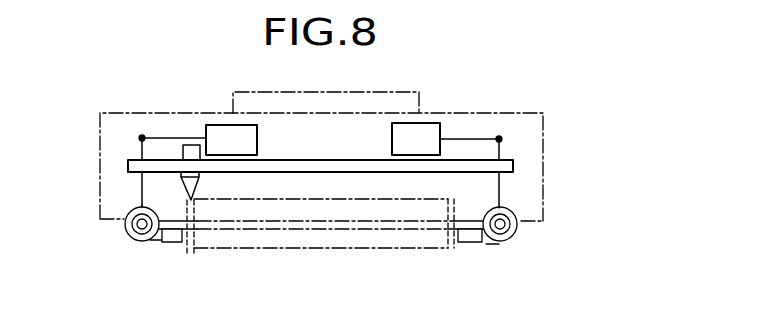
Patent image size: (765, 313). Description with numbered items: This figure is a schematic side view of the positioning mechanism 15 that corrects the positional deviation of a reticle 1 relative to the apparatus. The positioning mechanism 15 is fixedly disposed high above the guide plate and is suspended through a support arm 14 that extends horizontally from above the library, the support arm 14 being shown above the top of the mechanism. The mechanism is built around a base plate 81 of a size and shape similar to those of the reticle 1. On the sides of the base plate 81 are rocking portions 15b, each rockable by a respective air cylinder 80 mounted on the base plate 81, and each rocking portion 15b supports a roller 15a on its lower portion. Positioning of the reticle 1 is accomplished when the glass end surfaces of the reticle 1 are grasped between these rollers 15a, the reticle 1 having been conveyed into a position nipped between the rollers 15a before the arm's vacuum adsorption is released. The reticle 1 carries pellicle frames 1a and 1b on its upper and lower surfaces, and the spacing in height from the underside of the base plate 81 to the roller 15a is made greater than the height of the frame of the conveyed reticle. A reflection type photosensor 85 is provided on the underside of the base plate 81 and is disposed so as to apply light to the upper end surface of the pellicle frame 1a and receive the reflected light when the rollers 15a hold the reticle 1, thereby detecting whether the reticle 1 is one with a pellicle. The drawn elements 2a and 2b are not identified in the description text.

The reticle 1 is at (290, 230).
The pellicle frame 1a is at (195, 199).
The pellicle frame 1b is at (192, 248).
The right support block 2a is at (470, 242).
The left support block 2b is at (171, 242).
The support arm 14 is at (390, 92).
The positioning mechanism 15 is at (503, 113).
The rollers 15a is at (135, 232).
The rocking portions 15b is at (142, 152).
The air cylinders 80 is at (216, 132).
The base plate 81 is at (311, 170).
The reflection type photosensor 85 is at (188, 150).